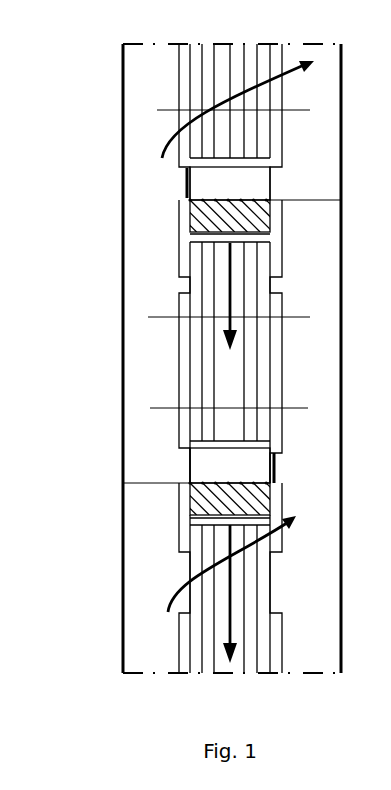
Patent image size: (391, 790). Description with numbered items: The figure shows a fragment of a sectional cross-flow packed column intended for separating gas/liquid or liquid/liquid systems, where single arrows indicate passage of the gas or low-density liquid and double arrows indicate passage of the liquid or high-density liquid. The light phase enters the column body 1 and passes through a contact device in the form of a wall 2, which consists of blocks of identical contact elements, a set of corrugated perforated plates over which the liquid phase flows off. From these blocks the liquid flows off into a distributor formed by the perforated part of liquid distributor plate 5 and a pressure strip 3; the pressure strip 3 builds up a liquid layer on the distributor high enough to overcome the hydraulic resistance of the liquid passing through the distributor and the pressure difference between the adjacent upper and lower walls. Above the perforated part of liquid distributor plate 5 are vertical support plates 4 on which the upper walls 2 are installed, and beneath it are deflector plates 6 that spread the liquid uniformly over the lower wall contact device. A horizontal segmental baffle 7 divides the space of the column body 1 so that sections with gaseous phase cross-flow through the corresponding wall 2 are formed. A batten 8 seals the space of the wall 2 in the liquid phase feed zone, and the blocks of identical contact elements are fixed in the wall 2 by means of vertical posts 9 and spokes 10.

The column body 1 is at (123, 72).
The contact device in the form of a wall 2 is at (178, 88).
The pressure strip 3 is at (185, 177).
The vertical support plates 4 is at (225, 183).
The perforated part of liquid distributor plate 5 is at (200, 219).
The deflector plates 6 is at (235, 207).
The horizontal segmental baffle 7 is at (148, 483).
The batten 8 is at (178, 268).
The vertical posts 9 is at (177, 297).
The spokes 10 is at (158, 317).